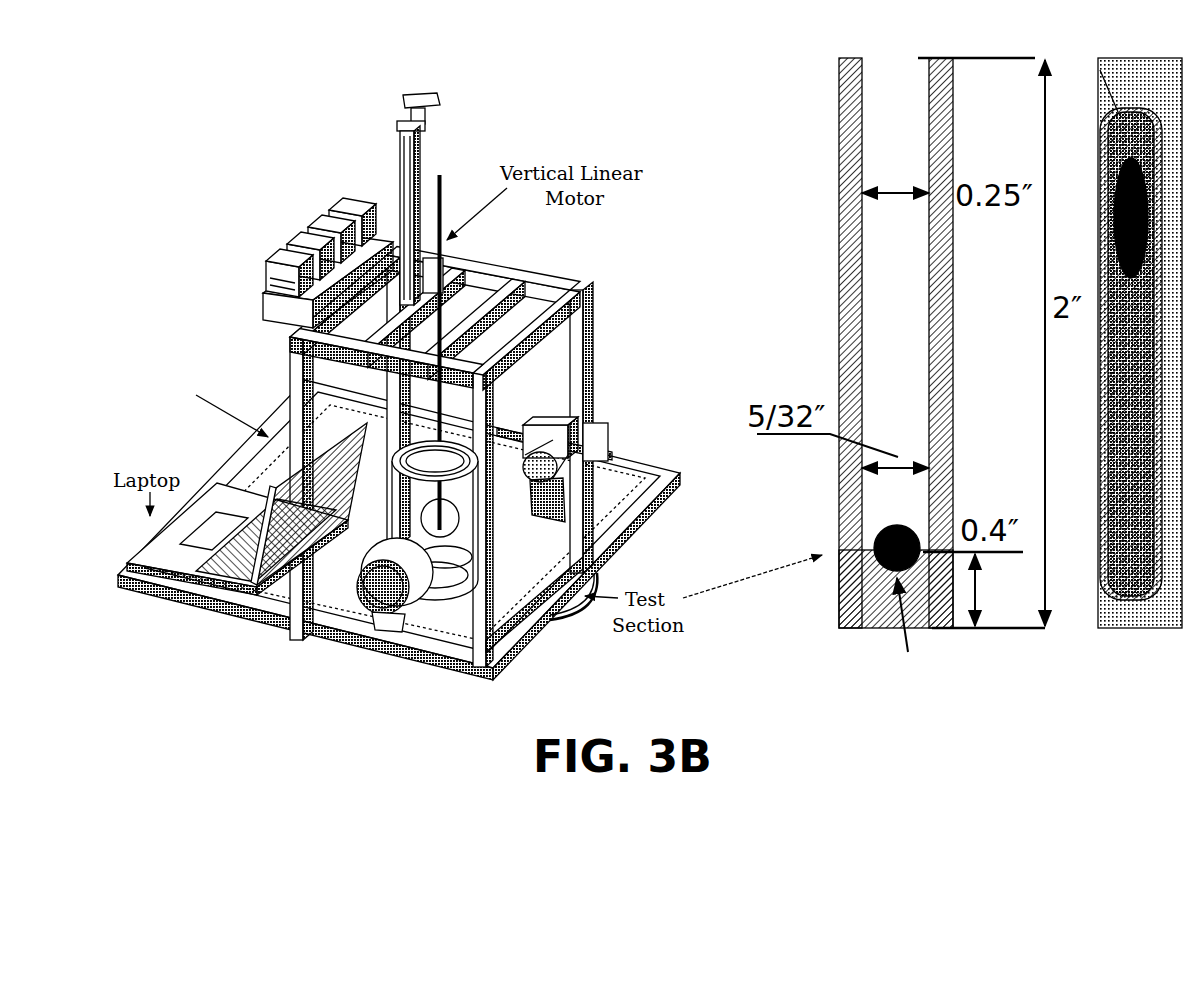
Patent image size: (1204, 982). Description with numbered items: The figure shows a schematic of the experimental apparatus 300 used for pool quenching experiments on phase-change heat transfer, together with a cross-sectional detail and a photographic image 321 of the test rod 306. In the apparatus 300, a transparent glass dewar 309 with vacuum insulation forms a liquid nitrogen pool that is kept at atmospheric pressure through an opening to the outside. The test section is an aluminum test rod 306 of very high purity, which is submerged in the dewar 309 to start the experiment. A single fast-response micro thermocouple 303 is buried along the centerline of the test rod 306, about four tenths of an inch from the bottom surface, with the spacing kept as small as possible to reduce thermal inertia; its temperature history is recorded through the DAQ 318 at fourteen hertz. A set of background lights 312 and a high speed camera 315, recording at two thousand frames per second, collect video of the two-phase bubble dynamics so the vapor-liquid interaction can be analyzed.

The experimental apparatus 300 is at (332, 198).
The DAQ 318 is at (265, 265).
The background lights 312 is at (616, 416).
The high speed camera 315 is at (356, 625).
The glass dewar 309 is at (537, 570).
The image of test rod 321 is at (1130, 55).
The test rod 306 is at (953, 447).
The thermocouple 303 is at (905, 545).